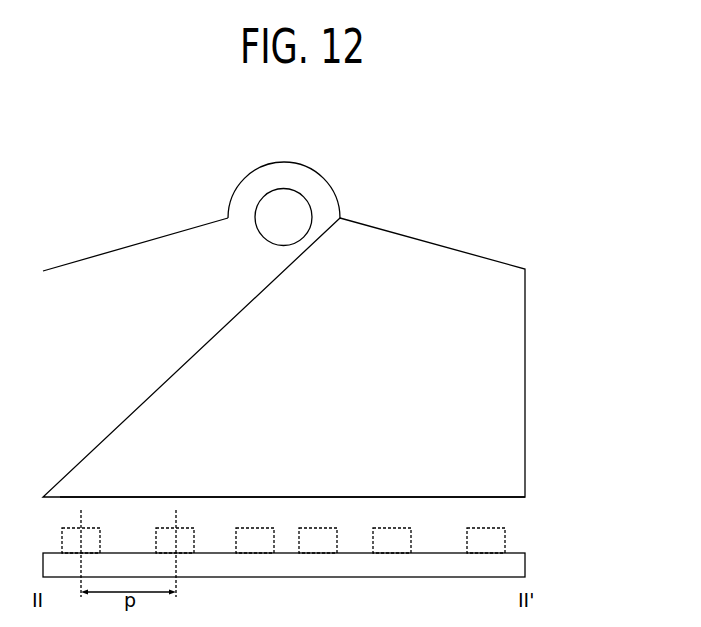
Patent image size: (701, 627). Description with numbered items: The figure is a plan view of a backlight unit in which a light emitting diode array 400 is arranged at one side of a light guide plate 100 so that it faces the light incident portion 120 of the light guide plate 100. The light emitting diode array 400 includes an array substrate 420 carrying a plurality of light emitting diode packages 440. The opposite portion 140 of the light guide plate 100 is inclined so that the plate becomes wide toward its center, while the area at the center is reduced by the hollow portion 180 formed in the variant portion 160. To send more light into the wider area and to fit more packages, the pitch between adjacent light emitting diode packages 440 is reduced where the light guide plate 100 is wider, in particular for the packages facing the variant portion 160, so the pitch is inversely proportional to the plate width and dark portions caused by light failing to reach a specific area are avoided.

The light guide plate 100 is at (318, 295).
The light incident portion 120 is at (497, 497).
The opposite portion 140 is at (477, 254).
The variant portion 160 is at (325, 177).
The hollow portion 180 is at (305, 217).
The light emitting diode array 400 is at (347, 555).
The array substrate 420 is at (520, 566).
The light emitting diode packages 440 is at (498, 541).